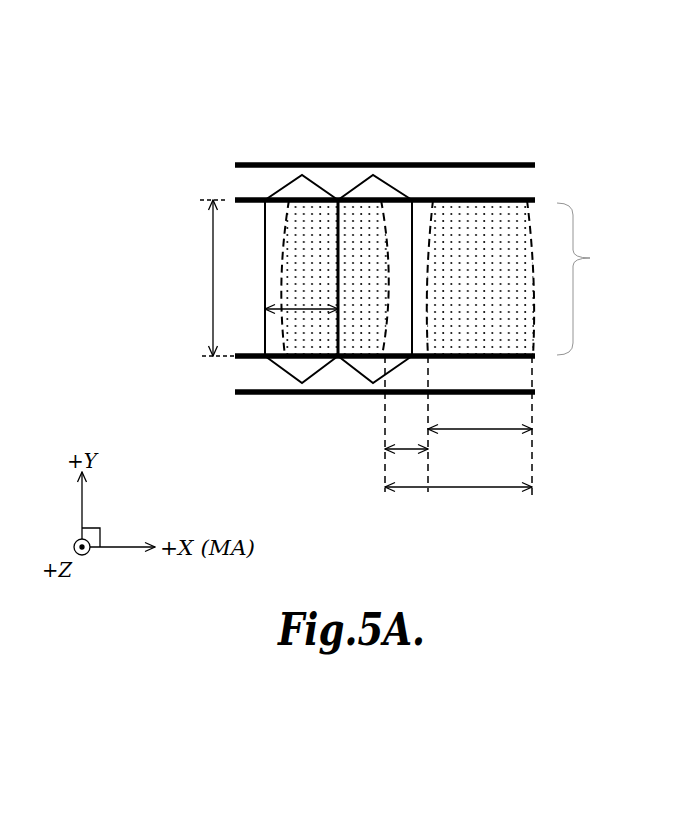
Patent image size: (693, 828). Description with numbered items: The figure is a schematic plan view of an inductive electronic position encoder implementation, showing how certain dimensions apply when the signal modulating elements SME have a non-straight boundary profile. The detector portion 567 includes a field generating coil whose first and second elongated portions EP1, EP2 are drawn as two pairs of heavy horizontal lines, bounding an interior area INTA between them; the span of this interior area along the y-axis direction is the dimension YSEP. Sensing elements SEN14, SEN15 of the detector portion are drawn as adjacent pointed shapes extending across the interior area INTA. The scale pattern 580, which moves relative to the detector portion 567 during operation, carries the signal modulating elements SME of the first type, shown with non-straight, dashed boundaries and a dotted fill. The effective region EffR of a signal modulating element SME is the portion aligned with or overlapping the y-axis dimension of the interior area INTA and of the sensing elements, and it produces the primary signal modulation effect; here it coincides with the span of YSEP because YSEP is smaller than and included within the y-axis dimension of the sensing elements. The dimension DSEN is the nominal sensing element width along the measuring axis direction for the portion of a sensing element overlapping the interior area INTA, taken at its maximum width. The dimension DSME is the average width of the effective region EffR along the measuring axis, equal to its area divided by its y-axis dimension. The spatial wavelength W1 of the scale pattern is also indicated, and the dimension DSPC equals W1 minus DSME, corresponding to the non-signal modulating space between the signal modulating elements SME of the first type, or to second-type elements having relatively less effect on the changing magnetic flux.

The detector portion 567 is at (512, 145).
The scale pattern 580 is at (545, 242).
The effective region EffR is at (407, 278).
The first elongated portion EP1 is at (243, 188).
The second elongated portion EP2 is at (243, 376).
The sensing element SEN14 is at (274, 191).
The sensing element SEN15 is at (349, 191).
The signal modulating element SME is at (312, 222).
The interior area INTA is at (607, 279).
The y-axis dimension of interior area YSEP is at (213, 238).
The nominal sensing element width dimension DSEN is at (298, 312).
The average dimension of effective region DSME is at (496, 431).
The non-signal modulating space dimension DSPC is at (423, 451).
The spatial wavelength W1 is at (477, 489).